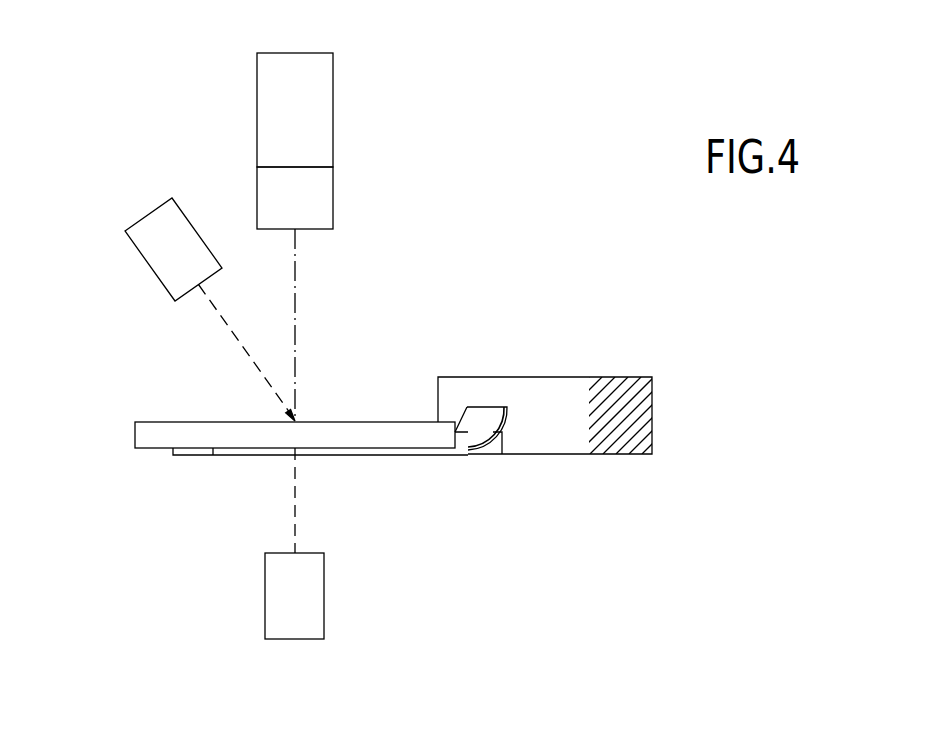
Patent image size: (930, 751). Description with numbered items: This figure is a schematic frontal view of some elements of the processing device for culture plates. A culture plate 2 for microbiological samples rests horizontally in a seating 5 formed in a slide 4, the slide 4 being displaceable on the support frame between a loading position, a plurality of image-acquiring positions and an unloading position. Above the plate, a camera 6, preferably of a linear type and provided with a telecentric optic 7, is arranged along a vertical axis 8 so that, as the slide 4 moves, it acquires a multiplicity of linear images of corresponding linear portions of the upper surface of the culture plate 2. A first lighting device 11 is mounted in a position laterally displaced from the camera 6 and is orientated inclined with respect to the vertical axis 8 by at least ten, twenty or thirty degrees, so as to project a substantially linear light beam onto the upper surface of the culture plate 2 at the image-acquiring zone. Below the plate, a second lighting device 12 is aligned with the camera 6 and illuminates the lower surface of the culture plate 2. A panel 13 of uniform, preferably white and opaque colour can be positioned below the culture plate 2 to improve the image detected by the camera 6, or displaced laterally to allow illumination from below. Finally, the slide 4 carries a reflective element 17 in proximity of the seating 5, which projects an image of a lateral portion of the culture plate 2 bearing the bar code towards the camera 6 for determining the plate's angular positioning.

The culture plate 2 is at (158, 432).
The slide 4 is at (656, 391).
The seating 5 is at (353, 432).
The camera 6 is at (337, 75).
The optic 7 is at (337, 203).
The vertical axis 8 is at (295, 300).
The first lighting device 11 is at (135, 222).
The second lighting device 12 is at (325, 615).
The panel 13 is at (198, 455).
The reflective element 17 is at (482, 423).